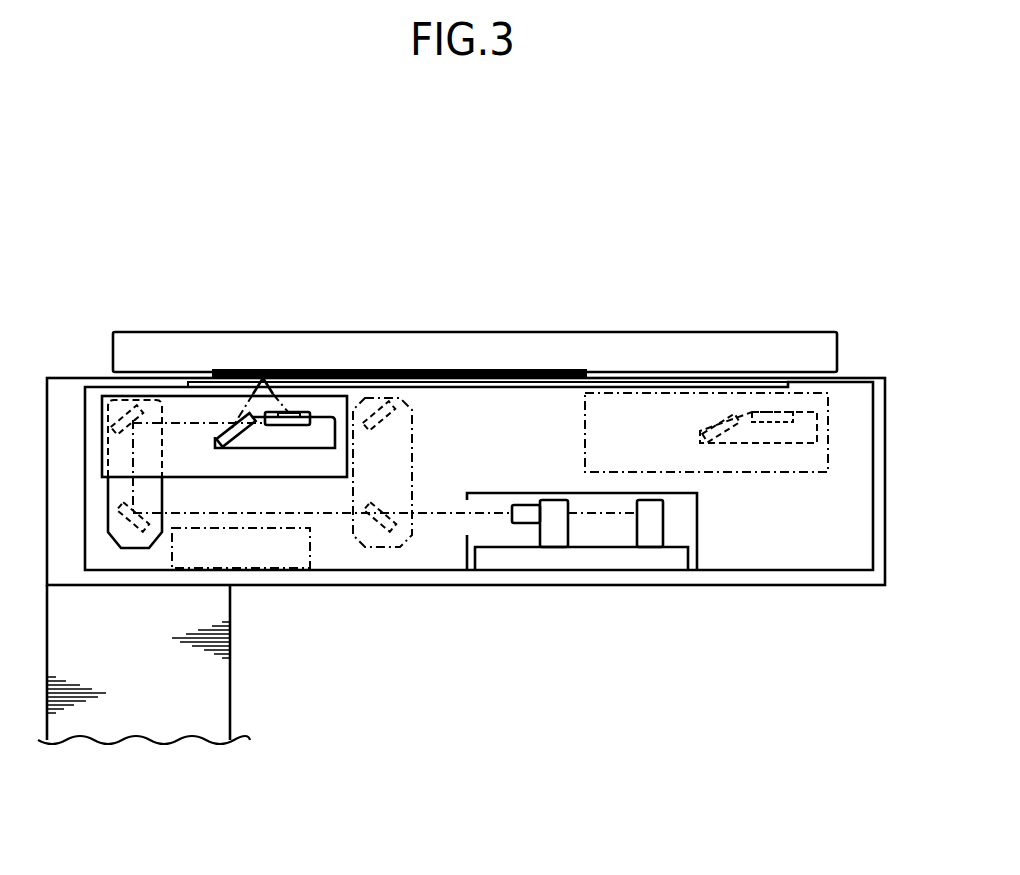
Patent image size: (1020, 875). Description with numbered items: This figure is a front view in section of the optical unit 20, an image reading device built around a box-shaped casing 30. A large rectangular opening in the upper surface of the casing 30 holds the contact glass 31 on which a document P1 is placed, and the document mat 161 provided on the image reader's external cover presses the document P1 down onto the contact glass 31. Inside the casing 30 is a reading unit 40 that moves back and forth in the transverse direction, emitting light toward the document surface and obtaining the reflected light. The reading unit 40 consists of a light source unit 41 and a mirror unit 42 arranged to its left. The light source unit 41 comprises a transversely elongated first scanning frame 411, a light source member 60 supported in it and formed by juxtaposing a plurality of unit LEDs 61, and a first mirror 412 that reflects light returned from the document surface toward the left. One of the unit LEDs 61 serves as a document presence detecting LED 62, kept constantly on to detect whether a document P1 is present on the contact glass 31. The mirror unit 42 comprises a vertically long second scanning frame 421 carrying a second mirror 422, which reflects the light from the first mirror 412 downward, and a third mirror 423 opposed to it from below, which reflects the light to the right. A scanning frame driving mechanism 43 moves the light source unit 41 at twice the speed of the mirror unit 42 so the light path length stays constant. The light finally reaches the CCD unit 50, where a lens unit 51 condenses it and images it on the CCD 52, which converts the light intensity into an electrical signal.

The optical unit 20 is at (758, 166).
The casing 30 is at (850, 377).
The document mat 161 is at (726, 346).
The contact glass 31 is at (497, 383).
The reading unit 40 is at (347, 218).
The light source unit 41 is at (430, 271).
The first scanning frame 411 is at (348, 405).
The first mirror 412 is at (218, 430).
The mirror unit 42 is at (215, 271).
The second scanning frame 421 is at (160, 406).
The second mirror 422 is at (97, 398).
The third mirror 423 is at (108, 523).
The scanning frame driving mechanism 43 is at (278, 550).
The light source member 60 is at (312, 418).
The unit LED 61 is at (290, 414).
The document presence detecting LED 62 is at (289, 415).
The document P1 is at (422, 368).
The CCD unit 50 is at (667, 218).
The lens unit 51 is at (553, 507).
The CCD 52 is at (650, 507).